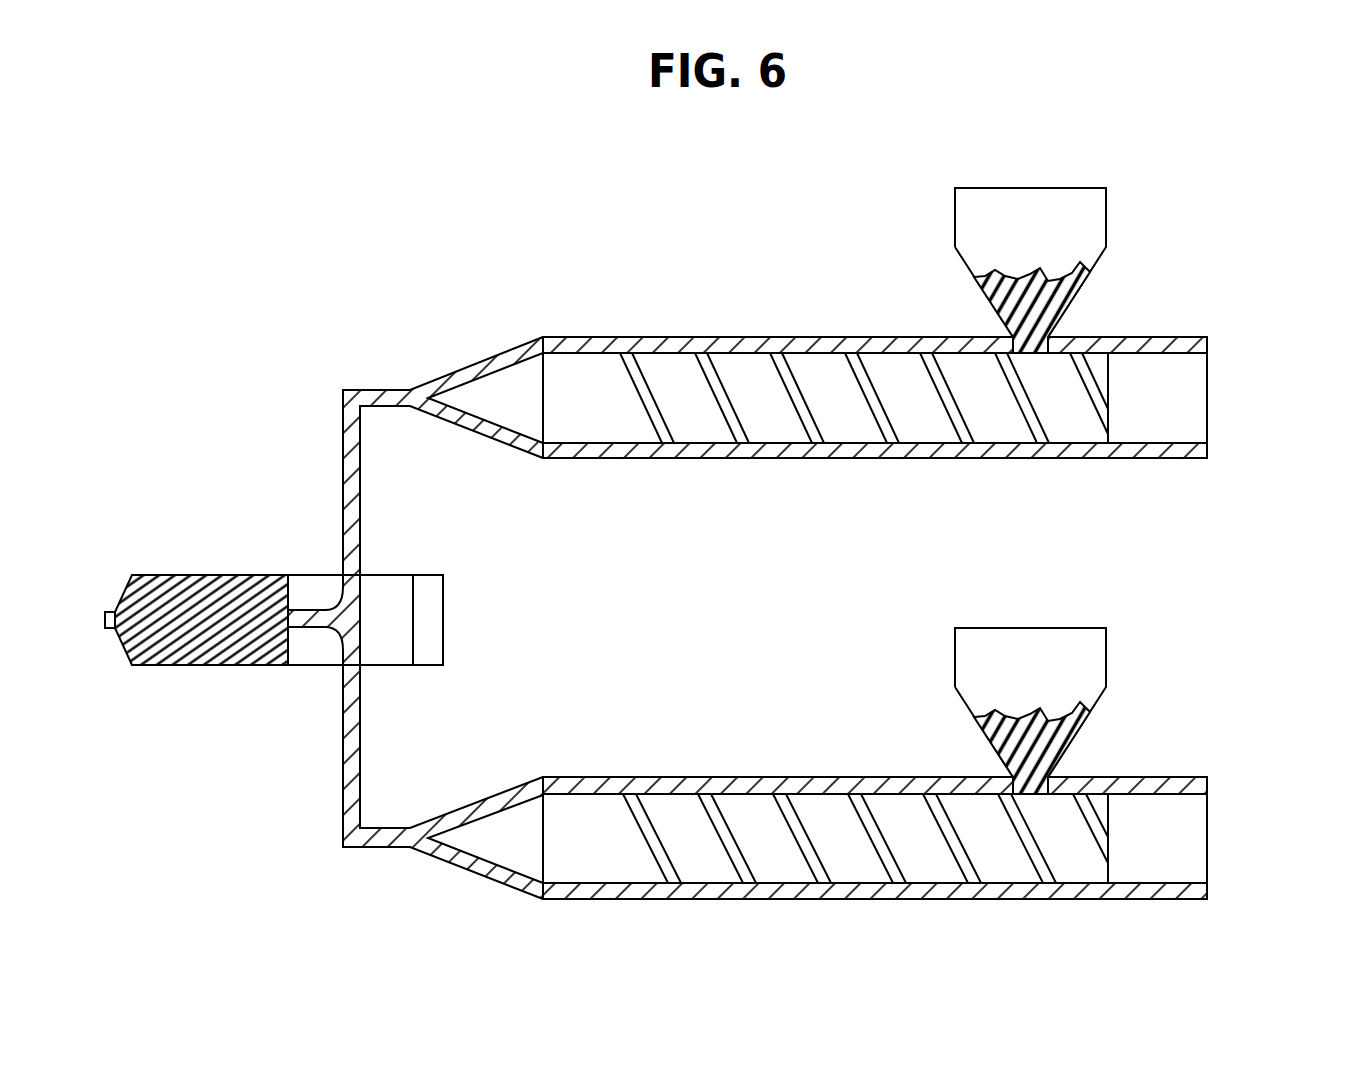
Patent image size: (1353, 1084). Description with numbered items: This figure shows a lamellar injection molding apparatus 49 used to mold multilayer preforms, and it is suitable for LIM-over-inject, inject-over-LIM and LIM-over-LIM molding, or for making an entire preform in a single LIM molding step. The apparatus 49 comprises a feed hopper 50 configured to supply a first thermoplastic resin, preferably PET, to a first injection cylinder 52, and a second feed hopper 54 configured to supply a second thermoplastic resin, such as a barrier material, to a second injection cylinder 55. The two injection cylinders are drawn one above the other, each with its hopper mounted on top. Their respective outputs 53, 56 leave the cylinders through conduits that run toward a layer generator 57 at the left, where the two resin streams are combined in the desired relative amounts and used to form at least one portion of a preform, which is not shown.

The lamellar injection molding apparatus 49 is at (380, 878).
The feed hopper 50 is at (1107, 207).
The first injection cylinder 52 is at (1182, 393).
The output 53 is at (345, 462).
The second feed hopper 54 is at (1107, 660).
The second injection cylinder 55 is at (1182, 842).
The output 56 is at (360, 767).
The layer generator 57 is at (162, 672).